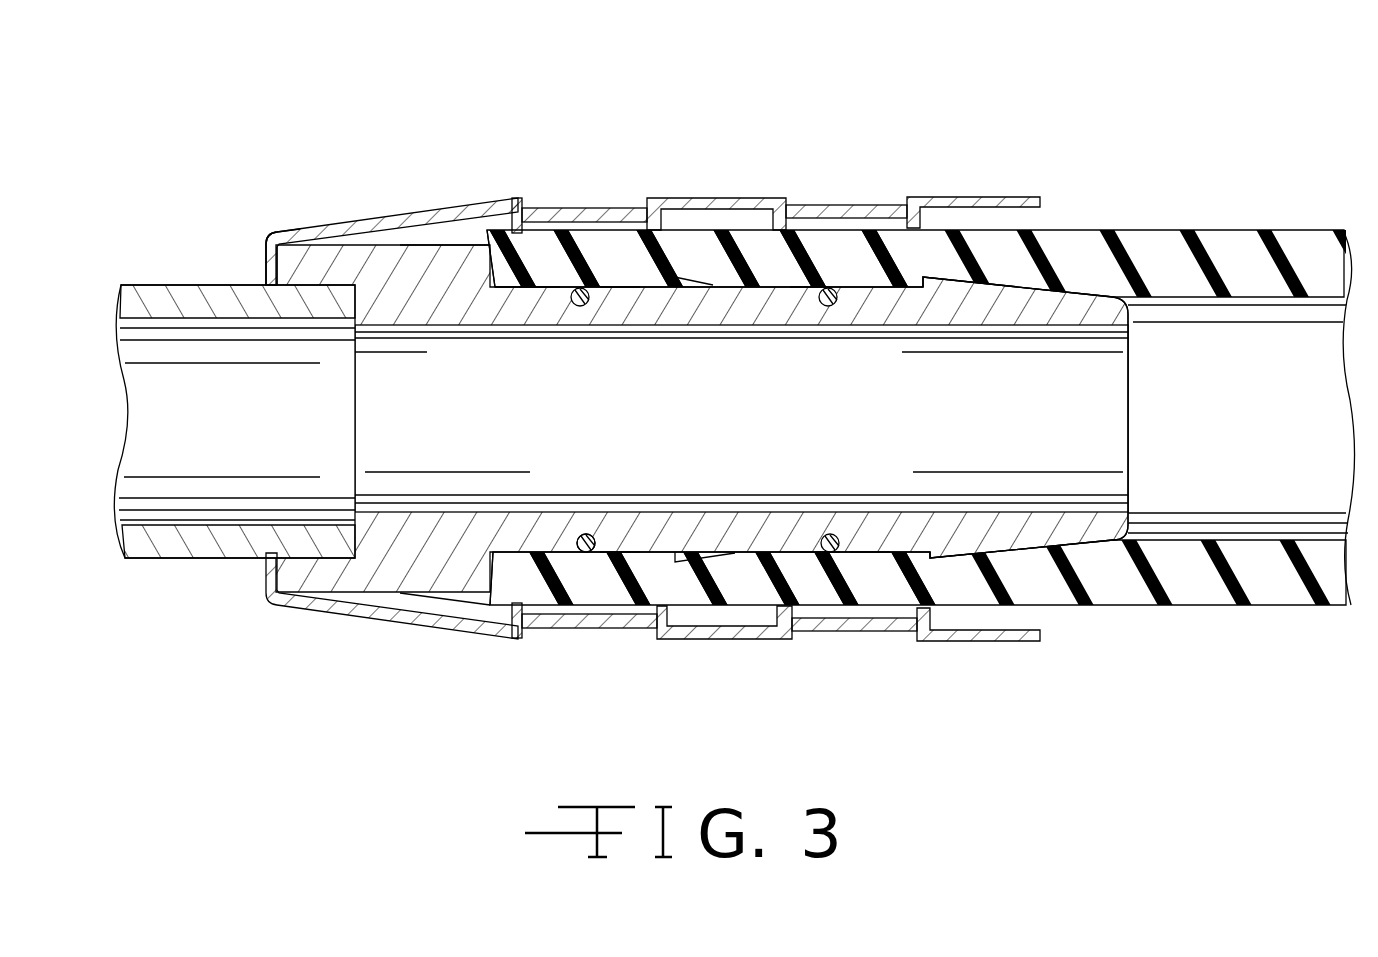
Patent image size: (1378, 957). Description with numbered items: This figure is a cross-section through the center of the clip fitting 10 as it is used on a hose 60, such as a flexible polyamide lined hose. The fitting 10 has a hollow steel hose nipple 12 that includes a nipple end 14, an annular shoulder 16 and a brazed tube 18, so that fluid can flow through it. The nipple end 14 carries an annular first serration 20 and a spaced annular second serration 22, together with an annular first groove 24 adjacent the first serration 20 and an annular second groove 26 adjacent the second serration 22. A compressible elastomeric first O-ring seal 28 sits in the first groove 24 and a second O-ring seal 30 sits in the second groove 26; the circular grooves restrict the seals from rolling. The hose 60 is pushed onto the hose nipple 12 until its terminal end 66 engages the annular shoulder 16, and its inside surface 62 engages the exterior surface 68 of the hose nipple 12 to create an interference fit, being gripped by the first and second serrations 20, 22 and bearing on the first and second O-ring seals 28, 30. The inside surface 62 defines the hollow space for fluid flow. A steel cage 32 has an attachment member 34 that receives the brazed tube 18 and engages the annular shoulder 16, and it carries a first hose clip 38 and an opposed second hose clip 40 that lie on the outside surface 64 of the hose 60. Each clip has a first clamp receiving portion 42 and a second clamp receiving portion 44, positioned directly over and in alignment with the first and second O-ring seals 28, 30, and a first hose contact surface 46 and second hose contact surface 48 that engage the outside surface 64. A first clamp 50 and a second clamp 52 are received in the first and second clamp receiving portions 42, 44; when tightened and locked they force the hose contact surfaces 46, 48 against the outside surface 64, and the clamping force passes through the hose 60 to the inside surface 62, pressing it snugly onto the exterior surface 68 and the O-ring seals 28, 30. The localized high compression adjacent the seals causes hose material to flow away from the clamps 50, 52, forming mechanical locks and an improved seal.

The fitting 10 is at (788, 90).
The hose nipple 12 is at (1087, 306).
The nipple end 14 is at (1135, 474).
The annular shoulder 16 is at (346, 578).
The brazed tube 18 is at (165, 565).
The first serration 20 is at (952, 642).
The second serration 22 is at (703, 640).
The first groove 24 is at (815, 540).
The second groove 26 is at (582, 532).
The first O-ring seal 28 is at (832, 555).
The second O-ring seal 30 is at (579, 555).
The cage 32 is at (300, 229).
The attachment member 34 is at (264, 266).
The first hose clip 38 is at (392, 216).
The second hose clip 40 is at (400, 625).
The first clamp receiving portion 42 is at (903, 622).
The second clamp receiving portion 44 is at (630, 622).
The first hose contact surface 46 is at (868, 535).
The second hose contact surface 48 is at (614, 560).
The first clamp 50 is at (512, 298).
The second clamp 52 is at (555, 207).
The hose 60 is at (1217, 227).
The inside surface 62 is at (1198, 302).
The outside surface 64 is at (688, 228).
The terminal end 66 is at (488, 232).
The exterior surface 68 is at (1033, 226).